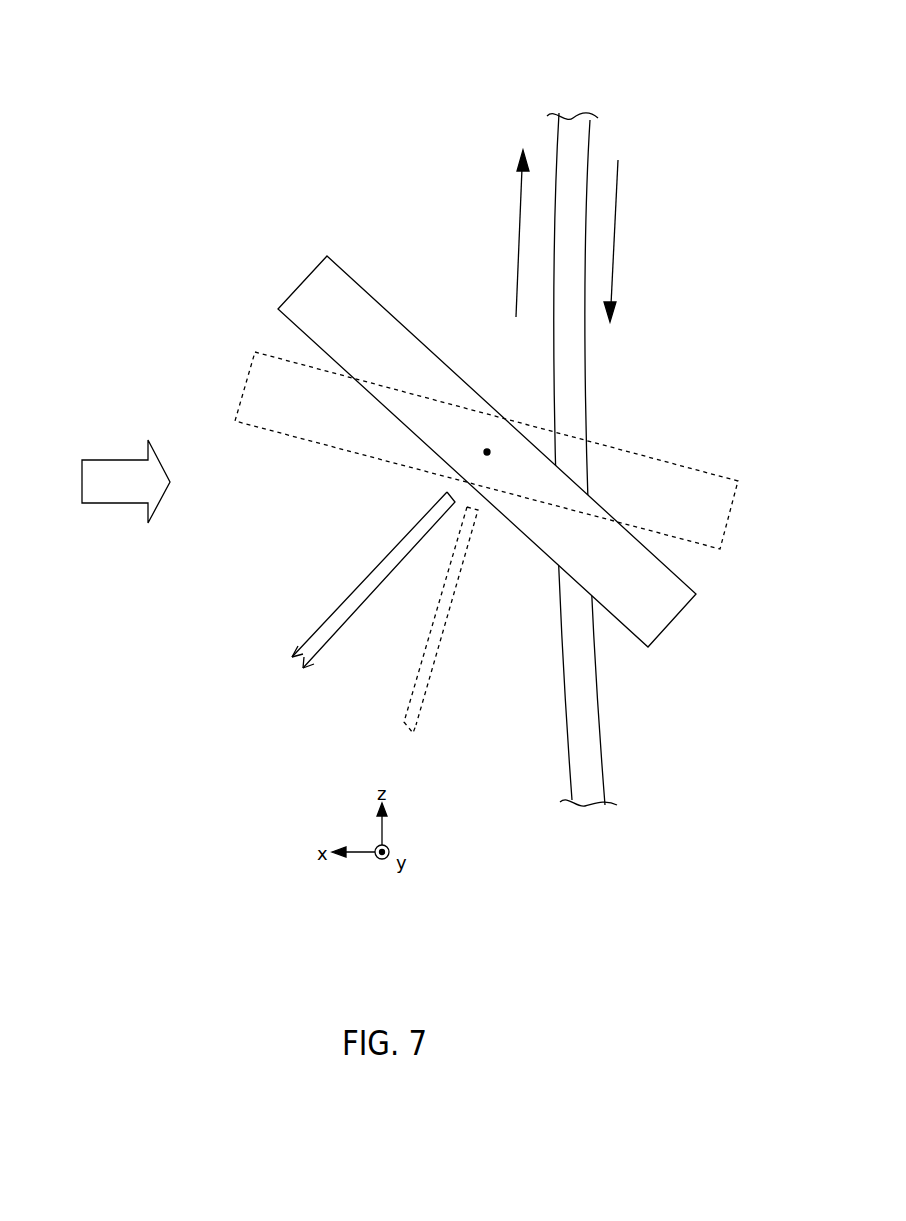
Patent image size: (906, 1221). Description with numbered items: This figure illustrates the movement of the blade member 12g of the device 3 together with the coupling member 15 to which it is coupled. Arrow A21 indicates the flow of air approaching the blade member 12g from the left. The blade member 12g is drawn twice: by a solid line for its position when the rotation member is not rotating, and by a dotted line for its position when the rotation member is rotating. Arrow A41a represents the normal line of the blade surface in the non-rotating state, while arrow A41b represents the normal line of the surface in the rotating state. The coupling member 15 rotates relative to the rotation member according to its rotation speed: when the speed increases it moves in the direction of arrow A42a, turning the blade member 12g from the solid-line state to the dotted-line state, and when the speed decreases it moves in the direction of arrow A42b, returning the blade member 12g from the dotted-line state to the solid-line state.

The optical device 3 is at (490, 66).
The blade member 12g is at (300, 278).
The coupling member 15 is at (583, 372).
The arrow indicating flow of air A21 is at (118, 460).
The arrow representing normal line of blade surface when not rotating A41a is at (365, 582).
The arrow representing normal line of blade surface when rotating A41b is at (450, 617).
The arrow indicating coupling member rotation direction on speed increase A42a is at (518, 230).
The arrow indicating coupling member rotation direction on speed decrease A42b is at (613, 230).